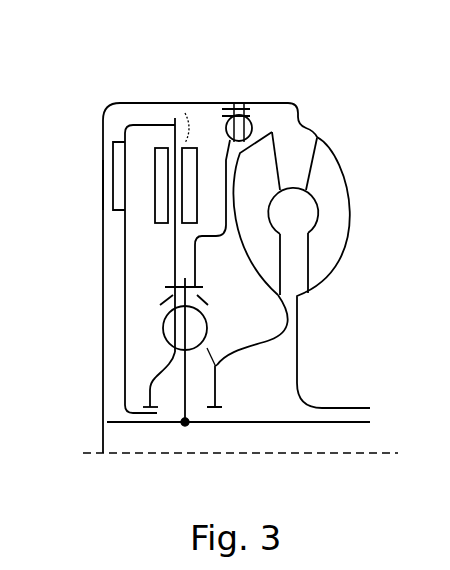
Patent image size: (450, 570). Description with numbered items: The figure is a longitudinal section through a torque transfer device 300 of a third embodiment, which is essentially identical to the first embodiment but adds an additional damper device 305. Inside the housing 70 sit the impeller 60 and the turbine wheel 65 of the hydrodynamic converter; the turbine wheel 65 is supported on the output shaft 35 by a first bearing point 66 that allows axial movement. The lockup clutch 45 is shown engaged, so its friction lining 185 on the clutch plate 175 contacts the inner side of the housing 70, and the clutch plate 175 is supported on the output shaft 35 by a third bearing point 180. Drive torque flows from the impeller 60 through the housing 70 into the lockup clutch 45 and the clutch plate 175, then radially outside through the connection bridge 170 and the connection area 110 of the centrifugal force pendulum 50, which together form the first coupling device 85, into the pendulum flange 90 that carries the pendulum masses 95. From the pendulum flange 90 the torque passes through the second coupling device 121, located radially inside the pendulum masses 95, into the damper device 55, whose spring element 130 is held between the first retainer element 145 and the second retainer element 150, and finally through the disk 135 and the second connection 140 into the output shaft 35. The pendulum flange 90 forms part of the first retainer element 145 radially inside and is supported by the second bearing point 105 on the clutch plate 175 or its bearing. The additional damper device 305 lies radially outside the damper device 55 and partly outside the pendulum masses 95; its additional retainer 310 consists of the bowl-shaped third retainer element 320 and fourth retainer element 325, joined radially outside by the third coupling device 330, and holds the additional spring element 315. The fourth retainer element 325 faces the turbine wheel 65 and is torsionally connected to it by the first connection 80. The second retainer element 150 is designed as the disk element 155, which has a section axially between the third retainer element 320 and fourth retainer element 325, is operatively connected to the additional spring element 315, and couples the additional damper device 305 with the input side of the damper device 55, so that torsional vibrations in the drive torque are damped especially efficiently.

The torque transfer device 300 is at (345, 108).
The lockup clutch 45 is at (130, 95).
The first coupling device 85 is at (160, 92).
The centrifugal force pendulum 50 is at (78, 187).
The housing 70 is at (107, 186).
The connection bridge 170 is at (128, 126).
The third bearing point 180 is at (128, 414).
The friction lining 185 is at (118, 157).
The clutch plate 175 is at (123, 237).
The connection area 110 is at (190, 128).
The additional retainer 310 is at (207, 122).
The pendulum masses 95 is at (180, 208).
The pendulum flange 90 is at (178, 246).
The third retainer element 320 is at (236, 100).
The third coupling device 330 is at (258, 105).
The additional damper device 305 is at (252, 122).
The fourth retainer element 325 is at (255, 131).
The additional spring element 315 is at (258, 141).
The turbine wheel 65 is at (263, 167).
The impeller 60 is at (332, 188).
The first connection 80 is at (250, 158).
The disk element 155 is at (245, 258).
The second retainer element 150 is at (197, 238).
The spring element 130 is at (215, 366).
The second coupling device 121 is at (155, 287).
The first retainer element 145 is at (145, 348).
The disk 135 is at (187, 400).
The damper device 55 is at (101, 360).
The second bearing point 105 is at (147, 413).
The second connection 140 is at (184, 427).
The output shaft 35 is at (306, 424).
The first bearing point 66 is at (226, 423).